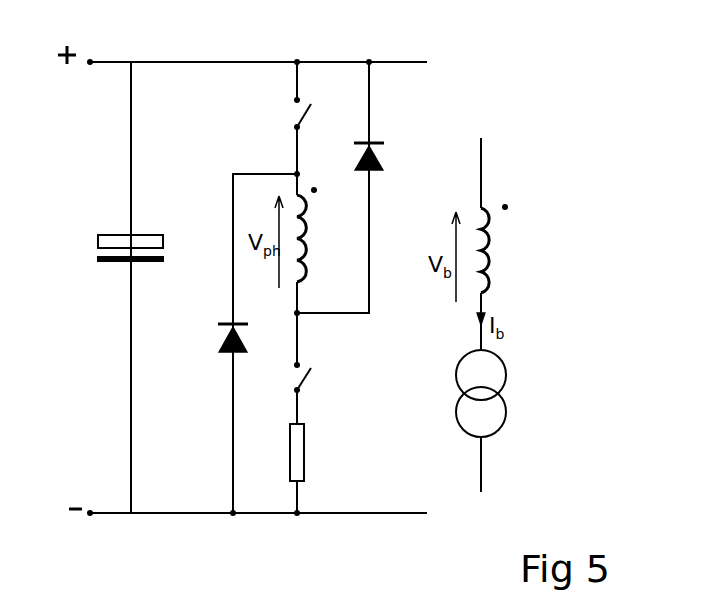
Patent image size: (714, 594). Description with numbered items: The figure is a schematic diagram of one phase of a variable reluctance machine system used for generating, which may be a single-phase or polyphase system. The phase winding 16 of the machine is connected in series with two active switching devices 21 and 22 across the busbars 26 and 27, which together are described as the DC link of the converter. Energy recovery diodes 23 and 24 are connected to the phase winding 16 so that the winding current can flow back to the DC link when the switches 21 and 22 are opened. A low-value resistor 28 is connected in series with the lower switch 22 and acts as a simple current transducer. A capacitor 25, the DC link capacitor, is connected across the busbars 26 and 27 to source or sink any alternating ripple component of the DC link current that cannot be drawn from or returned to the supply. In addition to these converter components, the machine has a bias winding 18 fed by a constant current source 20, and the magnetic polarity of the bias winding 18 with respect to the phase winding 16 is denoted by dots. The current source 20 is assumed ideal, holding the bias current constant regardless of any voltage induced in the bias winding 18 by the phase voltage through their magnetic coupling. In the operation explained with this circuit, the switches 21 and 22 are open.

The phase winding 16 is at (313, 218).
The bias winding 18 is at (497, 228).
The constant current source 20 is at (500, 362).
The active switching device 21 is at (292, 115).
The active switching device 22 is at (313, 378).
The energy recovery diode 23 is at (388, 153).
The energy recovery diode 24 is at (218, 333).
The DC link capacitor 25 is at (95, 250).
The busbar 26 is at (208, 62).
The busbar 27 is at (190, 513).
The low-value resistor 28 is at (306, 452).